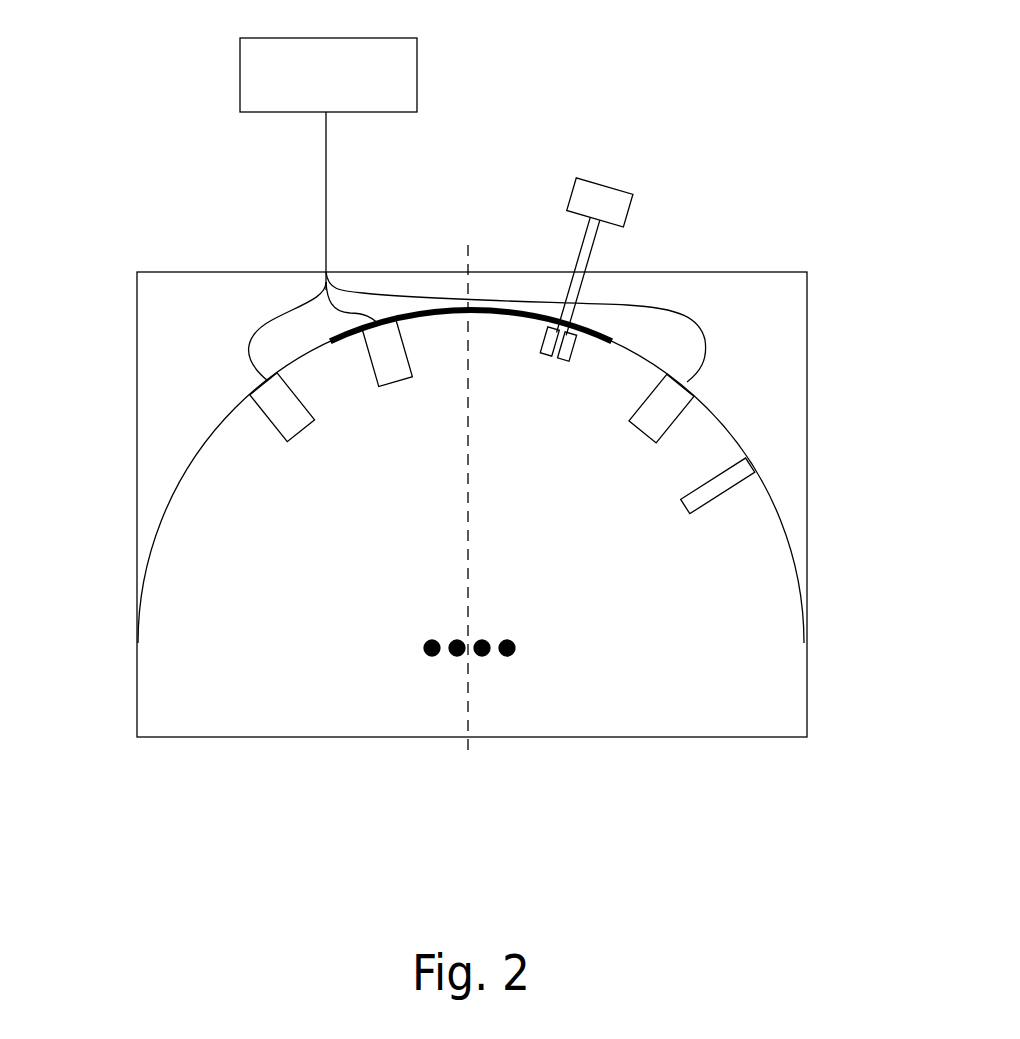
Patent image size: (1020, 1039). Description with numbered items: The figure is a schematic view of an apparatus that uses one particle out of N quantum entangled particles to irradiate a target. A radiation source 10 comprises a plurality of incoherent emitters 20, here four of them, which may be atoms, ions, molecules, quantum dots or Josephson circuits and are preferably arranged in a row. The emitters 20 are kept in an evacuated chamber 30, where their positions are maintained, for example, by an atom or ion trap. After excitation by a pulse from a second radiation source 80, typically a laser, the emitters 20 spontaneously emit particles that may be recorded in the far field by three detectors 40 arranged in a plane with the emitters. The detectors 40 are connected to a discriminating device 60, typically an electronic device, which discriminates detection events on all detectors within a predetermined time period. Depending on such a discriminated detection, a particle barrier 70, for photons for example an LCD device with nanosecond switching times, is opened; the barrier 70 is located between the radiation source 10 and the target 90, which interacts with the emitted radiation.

The radiation source 10 is at (430, 742).
The incoherent emitters 20 is at (438, 660).
The evacuated chamber 30 is at (645, 268).
The detectors 40 is at (267, 418).
The discriminating device 60 is at (420, 80).
The particle barrier 70 is at (541, 330).
The second radiation source 80 is at (713, 502).
The target 90 is at (617, 190).